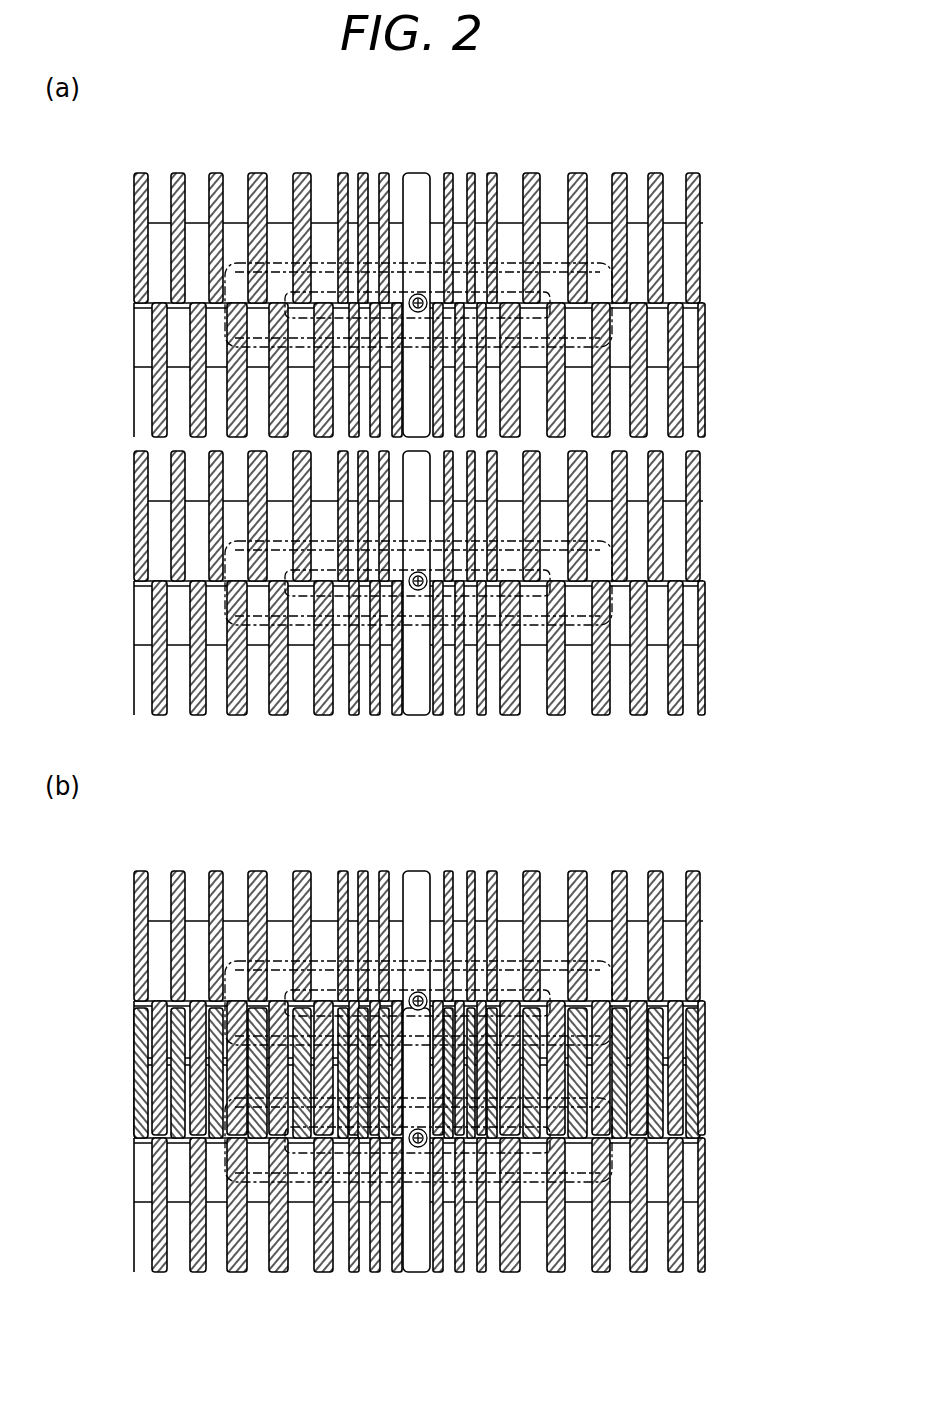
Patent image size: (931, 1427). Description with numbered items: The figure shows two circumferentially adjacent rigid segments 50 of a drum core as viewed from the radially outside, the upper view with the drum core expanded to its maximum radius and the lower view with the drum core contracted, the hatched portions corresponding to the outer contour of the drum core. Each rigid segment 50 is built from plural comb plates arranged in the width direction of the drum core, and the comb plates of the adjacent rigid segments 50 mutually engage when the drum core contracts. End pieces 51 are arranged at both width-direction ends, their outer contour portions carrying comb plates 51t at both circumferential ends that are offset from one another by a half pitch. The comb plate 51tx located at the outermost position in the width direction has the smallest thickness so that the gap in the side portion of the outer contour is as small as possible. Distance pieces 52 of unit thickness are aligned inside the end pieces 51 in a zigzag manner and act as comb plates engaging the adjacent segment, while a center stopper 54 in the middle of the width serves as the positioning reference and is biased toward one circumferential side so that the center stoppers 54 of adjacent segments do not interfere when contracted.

The rigid segment 50 is at (718, 297).
The end piece 51 is at (158, 160).
The comb plate 51t is at (614, 176).
The outermost comb plate 51tx is at (706, 385).
The distance piece 52 is at (490, 195).
The center stopper 54 is at (418, 190).